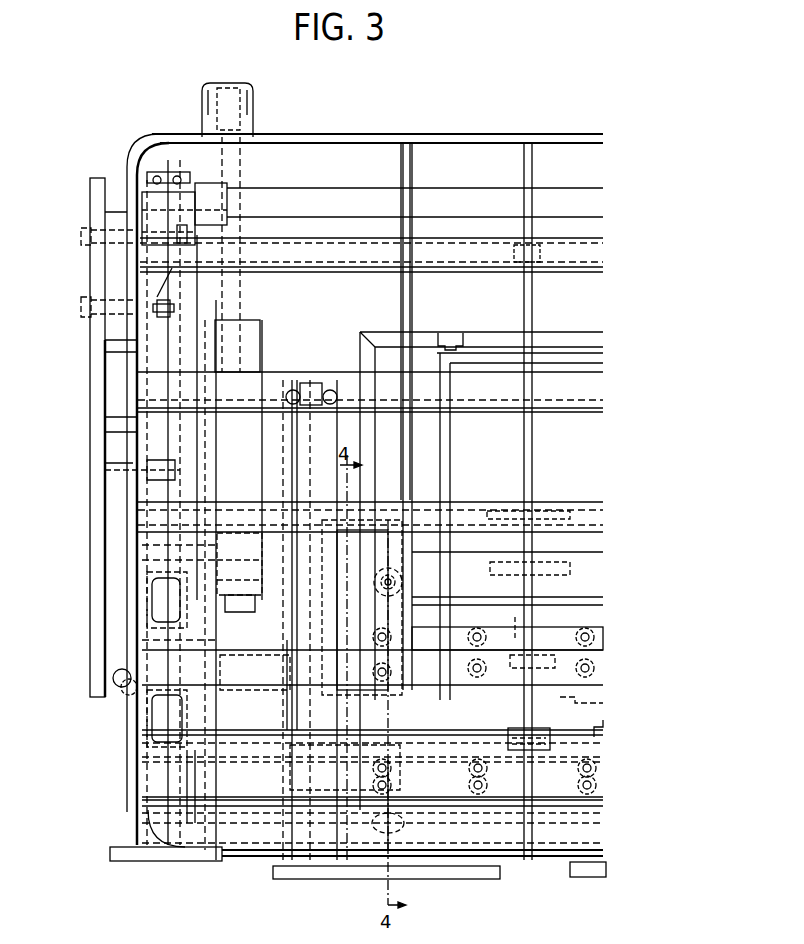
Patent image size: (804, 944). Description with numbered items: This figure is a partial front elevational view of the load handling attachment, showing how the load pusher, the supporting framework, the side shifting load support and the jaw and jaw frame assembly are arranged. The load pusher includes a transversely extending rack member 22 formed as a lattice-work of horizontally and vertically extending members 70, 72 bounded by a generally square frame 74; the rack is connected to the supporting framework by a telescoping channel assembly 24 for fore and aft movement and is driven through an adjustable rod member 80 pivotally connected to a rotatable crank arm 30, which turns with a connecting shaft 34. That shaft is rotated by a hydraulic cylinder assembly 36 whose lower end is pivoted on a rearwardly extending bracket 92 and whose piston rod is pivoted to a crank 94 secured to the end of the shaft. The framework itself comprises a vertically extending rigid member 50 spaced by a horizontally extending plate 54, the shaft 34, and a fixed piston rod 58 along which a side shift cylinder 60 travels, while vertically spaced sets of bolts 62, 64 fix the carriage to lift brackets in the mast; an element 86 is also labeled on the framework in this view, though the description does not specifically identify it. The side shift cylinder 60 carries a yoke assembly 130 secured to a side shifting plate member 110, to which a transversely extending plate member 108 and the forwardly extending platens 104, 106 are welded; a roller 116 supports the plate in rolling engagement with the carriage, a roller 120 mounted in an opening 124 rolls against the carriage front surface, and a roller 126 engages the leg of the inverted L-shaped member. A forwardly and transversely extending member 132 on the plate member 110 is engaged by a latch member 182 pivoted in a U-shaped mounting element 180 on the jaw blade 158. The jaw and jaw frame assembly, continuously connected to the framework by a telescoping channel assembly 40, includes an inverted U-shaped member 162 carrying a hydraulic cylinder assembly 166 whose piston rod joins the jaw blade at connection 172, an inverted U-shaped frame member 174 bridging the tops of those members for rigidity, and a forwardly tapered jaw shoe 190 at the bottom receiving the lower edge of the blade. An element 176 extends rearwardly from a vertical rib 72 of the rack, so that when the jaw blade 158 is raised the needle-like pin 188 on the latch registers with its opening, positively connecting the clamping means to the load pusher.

The rack member 22 is at (497, 131).
The telescoping channel assembly 24 is at (150, 595).
The crank arm 30 is at (90, 272).
The connecting shaft 34 is at (322, 196).
The hydraulic cylinder assembly 36 is at (248, 342).
The telescoping channel assembly 40 is at (150, 714).
The vertically extending rigid member 50 is at (200, 307).
The horizontally extending plate 54 is at (338, 410).
The fixed piston rod 58 is at (233, 527).
The side shift cylinder 60 is at (596, 560).
The bolts 62 is at (598, 668).
The bolts 64 is at (600, 771).
The horizontally extending member 70 is at (602, 274).
The vertically extending member 72 is at (534, 176).
The frame 74 is at (140, 825).
The adjustable rod member 80 is at (114, 676).
The guide member 86 is at (165, 477).
The bracket 92 is at (238, 667).
The crank 94 is at (196, 142).
The platen 104 is at (292, 880).
The platen 106 is at (580, 879).
The transversely extending plate member 108 is at (270, 861).
The side shifting plate member 110 is at (427, 500).
The roller 116 is at (405, 582).
The roller 120 is at (405, 834).
The opening 124 is at (405, 822).
The roller 126 is at (393, 520).
The yoke assembly 130 is at (578, 500).
The forwardly and transversely extending member 132 is at (603, 740).
The jaw blade 158 is at (160, 826).
The inverted U-shaped member 162 is at (322, 518).
The hydraulic cylinder assembly 166 is at (347, 575).
The piston rod connection 172 is at (345, 778).
The inverted U-shaped frame member 174 is at (545, 333).
The element 176 is at (516, 640).
The U-shaped mounting element 180 is at (582, 797).
The latch member 182 is at (525, 736).
The needle-like pin 188 is at (562, 722).
The jaw shoe 190 is at (115, 852).